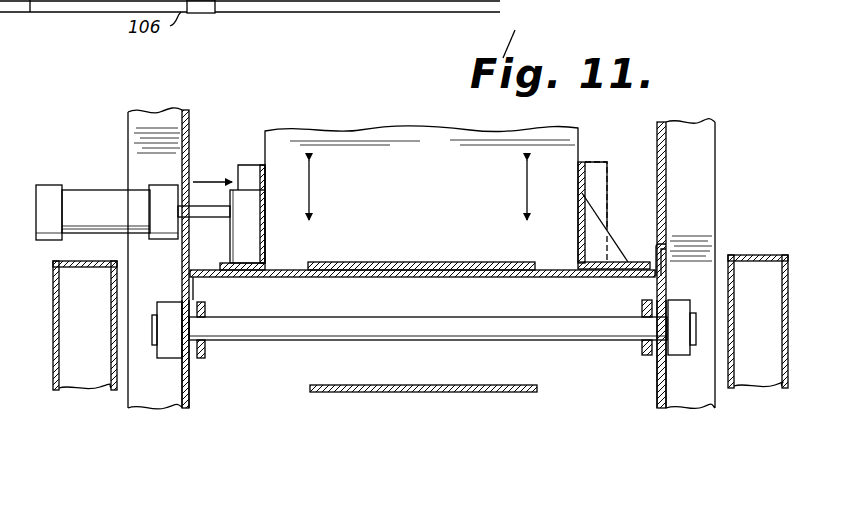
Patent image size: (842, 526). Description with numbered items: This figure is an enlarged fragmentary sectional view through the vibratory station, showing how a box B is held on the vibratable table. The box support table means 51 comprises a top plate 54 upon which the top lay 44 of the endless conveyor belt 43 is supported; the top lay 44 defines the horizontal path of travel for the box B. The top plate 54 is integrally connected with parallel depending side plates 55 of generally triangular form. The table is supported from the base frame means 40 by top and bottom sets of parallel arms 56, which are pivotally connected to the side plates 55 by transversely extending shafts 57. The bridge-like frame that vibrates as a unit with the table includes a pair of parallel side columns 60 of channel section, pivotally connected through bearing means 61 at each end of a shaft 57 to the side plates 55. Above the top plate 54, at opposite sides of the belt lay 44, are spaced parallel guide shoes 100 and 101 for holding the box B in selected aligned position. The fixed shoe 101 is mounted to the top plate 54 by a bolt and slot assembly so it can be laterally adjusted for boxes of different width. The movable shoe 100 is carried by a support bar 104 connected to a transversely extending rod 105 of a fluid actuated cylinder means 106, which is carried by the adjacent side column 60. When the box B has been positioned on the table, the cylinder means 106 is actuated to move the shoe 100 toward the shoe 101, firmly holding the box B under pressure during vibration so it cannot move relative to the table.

The base frame means 40 is at (793, 284).
The endless conveyor belt 43 is at (370, 385).
The top lay 44 is at (397, 263).
The box support table means 51 is at (663, 246).
The top plate 54 is at (511, 278).
The side plates 55 is at (195, 386).
The parallel arms 56 is at (645, 305).
The transversely extending shafts 57 is at (437, 322).
The side columns 60 is at (190, 121).
The bearing means 61 is at (169, 310).
The movable guide shoe 100 is at (247, 168).
The fixed guide shoe 101 is at (600, 182).
The support bar 104 is at (238, 255).
The transversely extending rod 105 is at (226, 211).
The fluid actuated cylinder means 106 is at (107, 212).
The box B is at (390, 153).